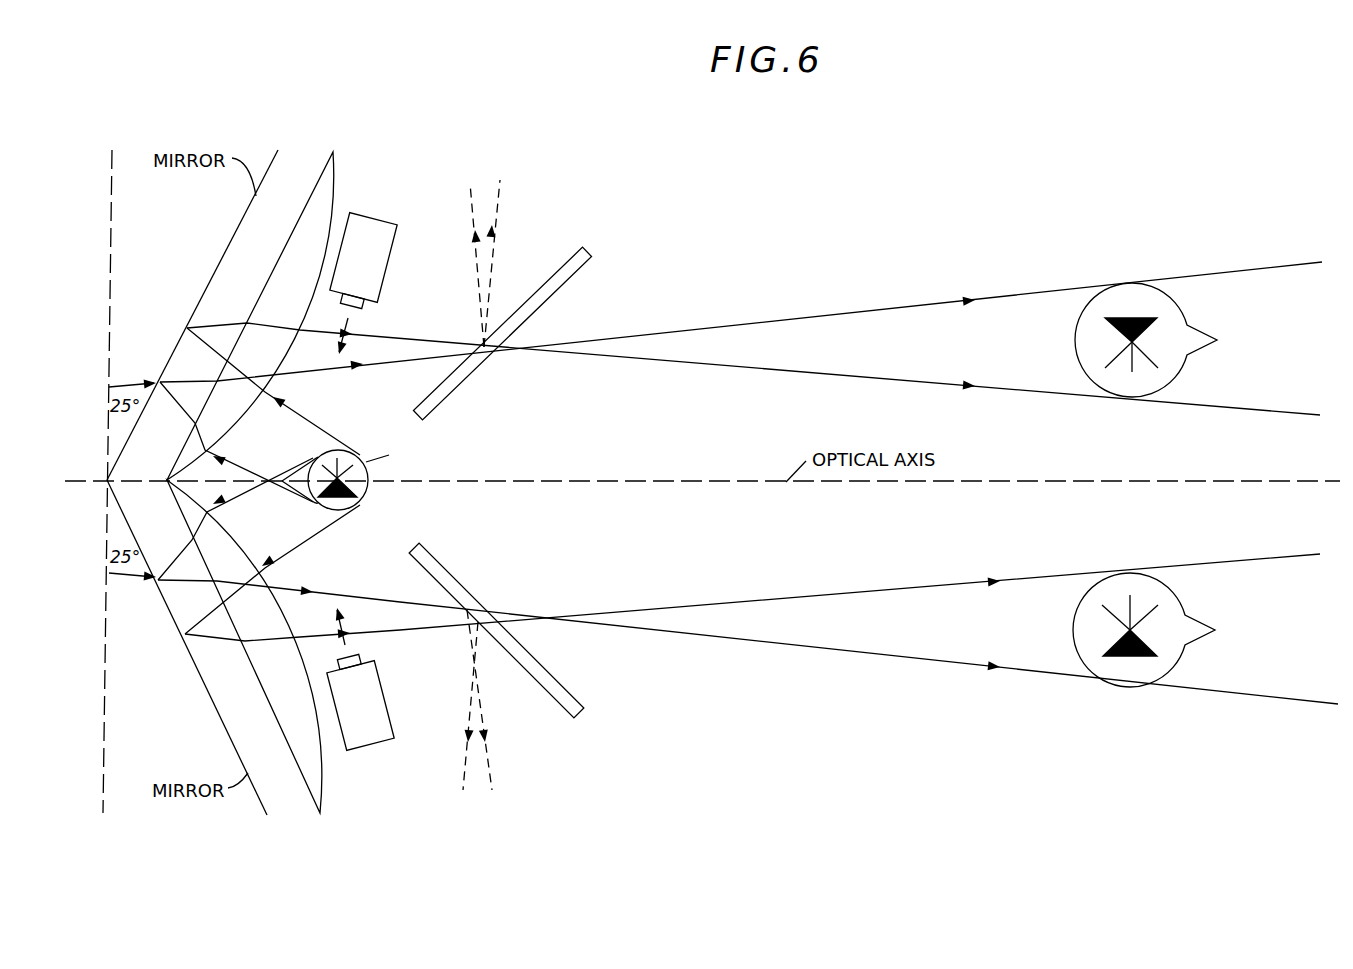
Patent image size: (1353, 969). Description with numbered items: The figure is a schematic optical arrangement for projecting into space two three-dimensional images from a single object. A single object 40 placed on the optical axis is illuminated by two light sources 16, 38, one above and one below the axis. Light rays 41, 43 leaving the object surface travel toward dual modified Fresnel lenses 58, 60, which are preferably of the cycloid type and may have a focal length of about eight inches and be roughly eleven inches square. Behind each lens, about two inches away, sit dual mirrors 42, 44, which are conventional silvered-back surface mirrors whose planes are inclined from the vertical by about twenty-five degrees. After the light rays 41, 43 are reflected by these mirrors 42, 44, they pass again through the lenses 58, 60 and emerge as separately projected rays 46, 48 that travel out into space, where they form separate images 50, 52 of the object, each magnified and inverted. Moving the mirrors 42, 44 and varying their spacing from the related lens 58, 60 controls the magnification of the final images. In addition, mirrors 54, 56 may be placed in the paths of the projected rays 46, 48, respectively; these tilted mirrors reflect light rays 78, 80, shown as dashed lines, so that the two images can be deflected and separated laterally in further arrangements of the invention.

The light source 16 is at (378, 269).
The light source 38 is at (377, 690).
The object 40 is at (370, 491).
The light ray 41 is at (307, 422).
The mirror 42 is at (214, 283).
The light ray 43 is at (308, 540).
The mirror 44 is at (176, 614).
The projected ray 46 is at (840, 308).
The projected ray 48 is at (870, 588).
The image 50 is at (1175, 300).
The image 52 is at (1175, 598).
The mirror 54 is at (566, 277).
The mirror 56 is at (450, 575).
The modified Fresnel lens 58 is at (331, 190).
The modified Fresnel lens 60 is at (320, 782).
The light rays 78 is at (497, 198).
The light rays 80 is at (486, 756).